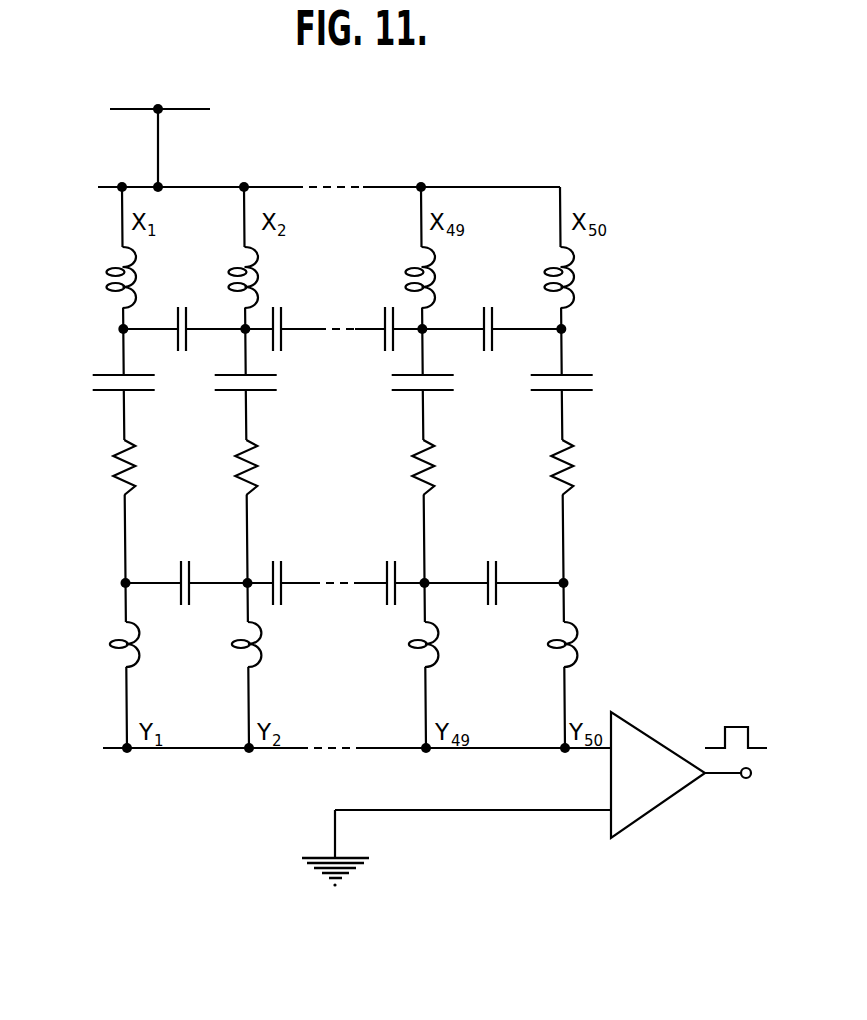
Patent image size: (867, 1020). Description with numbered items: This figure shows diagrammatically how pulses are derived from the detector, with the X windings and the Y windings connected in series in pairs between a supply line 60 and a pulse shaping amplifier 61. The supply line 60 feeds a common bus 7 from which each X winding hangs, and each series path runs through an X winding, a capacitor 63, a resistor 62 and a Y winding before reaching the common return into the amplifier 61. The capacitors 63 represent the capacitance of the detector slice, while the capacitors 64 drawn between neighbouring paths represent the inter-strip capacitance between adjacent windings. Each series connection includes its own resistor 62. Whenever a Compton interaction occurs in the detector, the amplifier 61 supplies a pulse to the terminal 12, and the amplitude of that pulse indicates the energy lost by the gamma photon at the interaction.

The matrix circuit / bus line 7 is at (566, 182).
The supply line 60 is at (170, 108).
The pulse shaping amplifier 61 is at (661, 812).
The resistor 62 is at (360, 467).
The capacitor 63 is at (107, 389).
The capacitor 64 is at (188, 306).
The terminal 12 is at (736, 765).